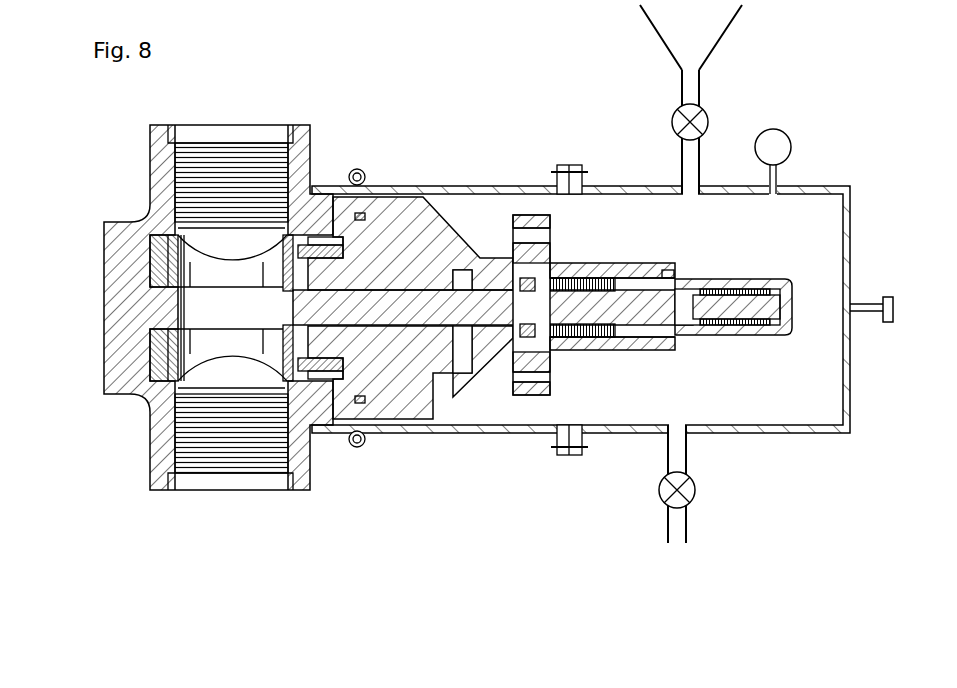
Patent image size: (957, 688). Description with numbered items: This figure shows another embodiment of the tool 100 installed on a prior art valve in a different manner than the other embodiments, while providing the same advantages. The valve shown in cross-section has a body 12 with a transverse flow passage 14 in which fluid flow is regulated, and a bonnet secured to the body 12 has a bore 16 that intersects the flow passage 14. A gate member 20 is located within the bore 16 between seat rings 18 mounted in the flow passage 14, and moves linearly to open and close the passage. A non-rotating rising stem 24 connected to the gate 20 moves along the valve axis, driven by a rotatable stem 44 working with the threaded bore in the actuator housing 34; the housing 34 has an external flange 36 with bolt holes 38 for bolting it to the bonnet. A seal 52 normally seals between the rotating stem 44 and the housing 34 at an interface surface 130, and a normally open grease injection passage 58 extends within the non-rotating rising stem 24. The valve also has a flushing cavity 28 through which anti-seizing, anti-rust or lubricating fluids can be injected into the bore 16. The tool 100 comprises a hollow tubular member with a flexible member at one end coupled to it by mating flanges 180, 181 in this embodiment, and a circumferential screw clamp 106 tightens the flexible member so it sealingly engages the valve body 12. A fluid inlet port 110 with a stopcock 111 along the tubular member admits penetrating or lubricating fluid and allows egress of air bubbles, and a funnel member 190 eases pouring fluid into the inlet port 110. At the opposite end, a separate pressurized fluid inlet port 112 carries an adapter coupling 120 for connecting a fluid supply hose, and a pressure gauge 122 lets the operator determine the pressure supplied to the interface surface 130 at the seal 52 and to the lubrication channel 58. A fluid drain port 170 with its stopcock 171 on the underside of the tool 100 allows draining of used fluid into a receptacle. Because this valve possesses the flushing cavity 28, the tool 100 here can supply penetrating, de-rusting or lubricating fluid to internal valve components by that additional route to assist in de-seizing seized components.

The tool 100 is at (503, 140).
The body 12 is at (302, 432).
The transverse flow passage 14 is at (283, 440).
The bore 16 is at (403, 222).
The seat rings 18 is at (288, 260).
The gate member 20 is at (387, 312).
The non-rotating rising stem 24 is at (643, 316).
The flushing cavity 28 is at (462, 368).
The actuator housing 34 is at (655, 350).
The external flange 36 is at (515, 223).
The bolt holes 38 is at (510, 372).
The rotatable stem 44 is at (779, 281).
The seal 52 is at (672, 270).
The grease injection passage 58 is at (752, 280).
The screw clamp 106 is at (357, 168).
The fluid inlet port 110 is at (682, 160).
The stopcock 111 is at (703, 117).
The pressurized fluid inlet port 112 is at (873, 302).
The adapter coupling 120 is at (893, 308).
The pressure gauge 122 is at (791, 146).
The interface surface 130 is at (686, 270).
The fluid drain port 170 is at (690, 440).
The stopcock 171 is at (697, 490).
The mating flange 180 is at (562, 164).
The mating flange 181 is at (572, 164).
The funnel member 190 is at (735, 26).